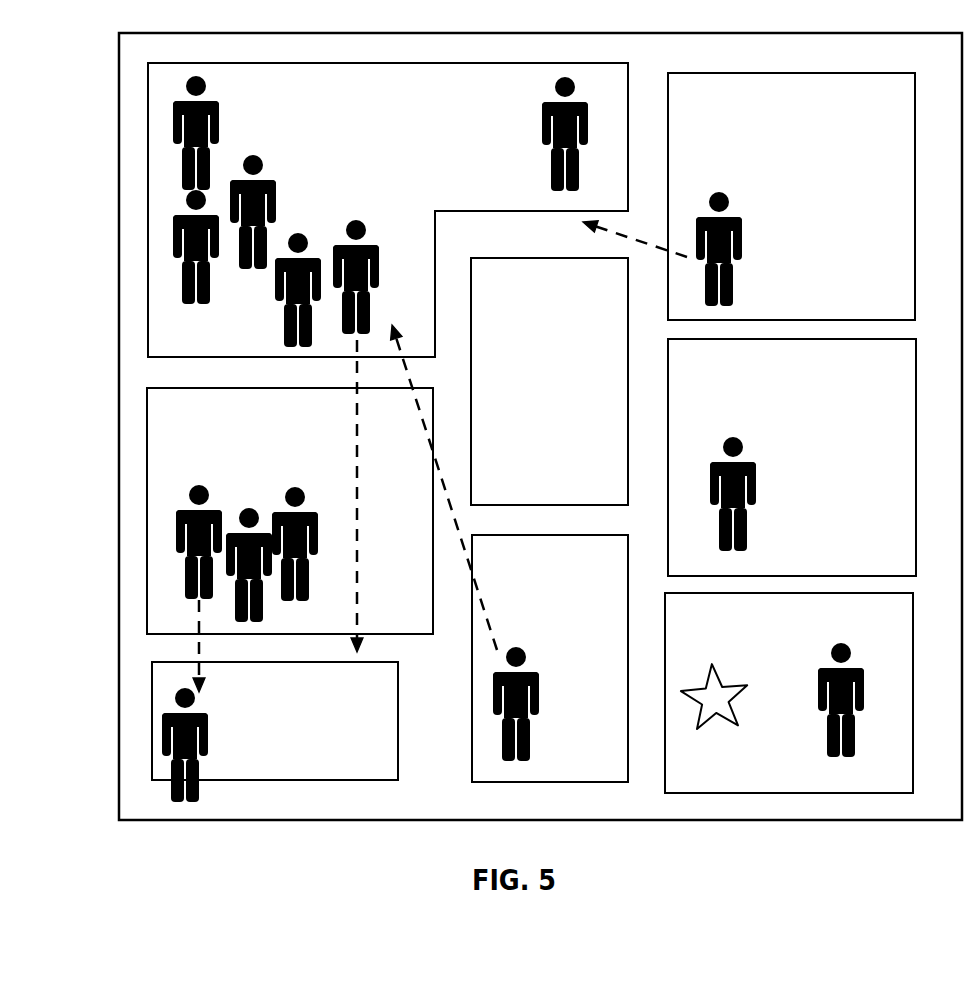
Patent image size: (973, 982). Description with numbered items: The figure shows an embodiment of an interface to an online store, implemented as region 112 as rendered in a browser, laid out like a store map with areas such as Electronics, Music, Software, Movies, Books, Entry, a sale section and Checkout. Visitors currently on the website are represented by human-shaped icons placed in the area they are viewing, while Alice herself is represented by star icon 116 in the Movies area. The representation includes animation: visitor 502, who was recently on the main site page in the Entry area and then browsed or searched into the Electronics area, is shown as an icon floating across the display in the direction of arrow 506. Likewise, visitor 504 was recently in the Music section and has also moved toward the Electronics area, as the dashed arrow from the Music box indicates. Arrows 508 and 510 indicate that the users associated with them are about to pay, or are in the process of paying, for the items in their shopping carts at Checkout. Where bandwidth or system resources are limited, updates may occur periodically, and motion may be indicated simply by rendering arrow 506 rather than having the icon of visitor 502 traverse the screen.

The region 112 is at (618, 819).
The visitor 502 is at (537, 668).
The visitor 504 is at (740, 222).
The arrow 506 is at (437, 466).
The arrow 508 is at (357, 570).
The arrow 510 is at (200, 690).
The star icon 116 is at (710, 722).